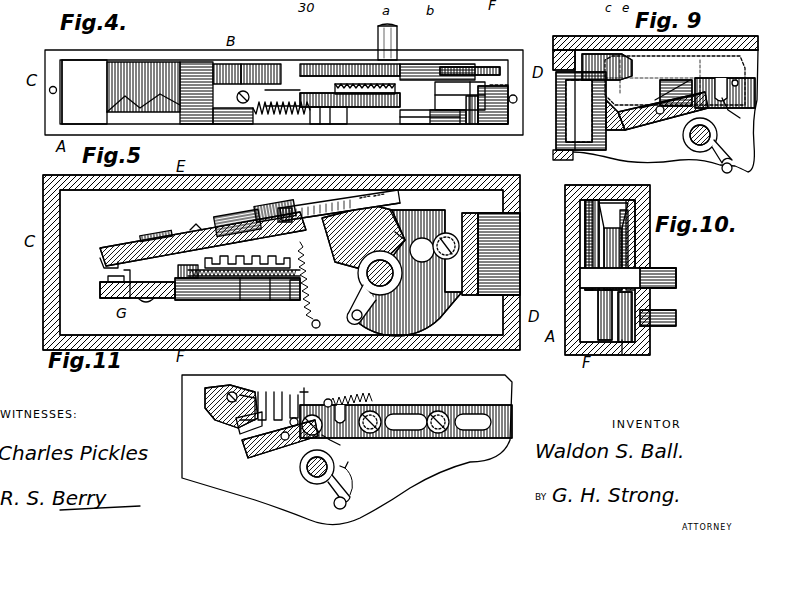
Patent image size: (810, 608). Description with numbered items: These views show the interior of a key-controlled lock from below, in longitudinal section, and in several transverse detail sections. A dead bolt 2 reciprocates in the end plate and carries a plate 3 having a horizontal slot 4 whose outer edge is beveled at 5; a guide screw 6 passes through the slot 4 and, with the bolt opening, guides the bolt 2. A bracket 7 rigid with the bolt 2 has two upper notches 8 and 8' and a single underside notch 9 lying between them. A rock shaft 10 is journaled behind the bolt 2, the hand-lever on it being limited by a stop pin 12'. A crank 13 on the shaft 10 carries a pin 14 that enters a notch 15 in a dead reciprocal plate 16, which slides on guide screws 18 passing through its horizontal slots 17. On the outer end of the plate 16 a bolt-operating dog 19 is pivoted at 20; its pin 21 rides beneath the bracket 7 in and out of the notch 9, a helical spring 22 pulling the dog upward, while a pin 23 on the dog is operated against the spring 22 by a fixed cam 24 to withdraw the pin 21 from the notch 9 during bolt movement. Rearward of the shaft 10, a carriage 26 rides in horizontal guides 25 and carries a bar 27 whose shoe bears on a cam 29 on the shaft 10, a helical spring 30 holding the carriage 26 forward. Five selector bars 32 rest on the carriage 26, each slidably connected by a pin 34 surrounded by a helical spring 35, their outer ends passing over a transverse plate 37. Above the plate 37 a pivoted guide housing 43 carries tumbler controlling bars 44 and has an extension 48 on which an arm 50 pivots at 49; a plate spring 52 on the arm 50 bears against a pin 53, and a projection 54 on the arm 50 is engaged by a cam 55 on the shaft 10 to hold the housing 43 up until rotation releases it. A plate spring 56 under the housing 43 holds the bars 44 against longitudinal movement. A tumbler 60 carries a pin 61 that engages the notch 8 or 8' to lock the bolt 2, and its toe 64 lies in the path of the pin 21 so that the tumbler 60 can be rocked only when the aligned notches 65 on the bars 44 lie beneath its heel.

In FIG. 4, the dead bolt 2 is at (493, 112).
In FIG. 5, the dead bolt 2 is at (520, 240).
In FIG. 4, the plate 3 is at (472, 124).
In FIG. 5, the plate 3 is at (445, 290).
In FIG. 10, the plate 3 is at (580, 218).
In FIG. 5, the slot 4 is at (408, 266).
In FIG. 5, the beveled edge 5 is at (392, 252).
In FIG. 4, the guide screw 6 is at (446, 124).
In FIG. 5, the guide screw 6 is at (434, 247).
In FIG. 4, the bracket 7 is at (460, 103).
In FIG. 9, the bracket 7 is at (552, 62).
In FIG. 10, the bracket 7 is at (640, 196).
In FIG. 11, the bracket 7 is at (278, 392).
In FIG. 11, the notch 8 is at (262, 392).
In FIG. 11, the notch 8' is at (312, 386).
In FIG. 11, the notch 9 is at (295, 395).
In FIG. 4, the rock shaft 10 is at (376, 42).
In FIG. 5, the rock shaft 10 is at (358, 280).
In FIG. 9, the rock shaft 10 is at (700, 135).
In FIG. 10, the rock shaft 10 is at (672, 272).
In FIG. 11, the rock shaft 10 is at (300, 475).
In FIG. 10, the stop pin 12' is at (660, 307).
In FIG. 4, the crank 13 is at (350, 100).
In FIG. 5, the crank 13 is at (362, 318).
In FIG. 9, the crank 13 is at (698, 152).
In FIG. 10, the crank 13 is at (622, 354).
In FIG. 11, the crank 13 is at (356, 496).
In FIG. 5, the pin 14 is at (352, 317).
In FIG. 9, the pin 14 is at (732, 160).
In FIG. 10, the pin 14 is at (638, 334).
In FIG. 11, the pin 14 is at (334, 505).
In FIG. 9, the notch 15 is at (729, 110).
In FIG. 4, the reciprocal plate 16 is at (318, 64).
In FIG. 9, the reciprocal plate 16 is at (752, 78).
In FIG. 11, the reciprocal plate 16 is at (494, 405).
In FIG. 11, the horizontal slots 17 is at (400, 430).
In FIG. 4, the guide screws 18 is at (360, 86).
In FIG. 11, the guide screws 18 is at (420, 396).
In FIG. 4, the bolt-operating dog 19 is at (425, 72).
In FIG. 9, the bolt-operating dog 19 is at (636, 128).
In FIG. 11, the bolt-operating dog 19 is at (240, 440).
In FIG. 9, the pivot 20 is at (690, 110).
In FIG. 11, the pivot 20 is at (340, 445).
In FIG. 9, the pin 21 is at (660, 116).
In FIG. 11, the pin 21 is at (290, 444).
In FIG. 11, the helical spring 22 is at (350, 402).
In FIG. 9, the pin 23 is at (606, 122).
In FIG. 10, the pin 23 is at (598, 320).
In FIG. 11, the pin 23 is at (231, 417).
In FIG. 4, the fixed cam 24 is at (478, 67).
In FIG. 9, the fixed cam 24 is at (595, 36).
In FIG. 10, the fixed cam 24 is at (640, 246).
In FIG. 11, the fixed cam 24 is at (200, 432).
In FIG. 4, the horizontal guides 25 is at (213, 64).
In FIG. 5, the horizontal guides 25 is at (170, 298).
In FIG. 4, the carriage 26 is at (282, 64).
In FIG. 5, the carriage 26 is at (262, 300).
In FIG. 4, the bar 27 is at (328, 115).
In FIG. 4, the cam 29 is at (430, 116).
In FIG. 4, the helical spring 30 is at (275, 116).
In FIG. 4, the selector bars 32 is at (143, 87).
In FIG. 5, the selector bars 32 is at (270, 252).
In FIG. 5, the pin 34 is at (295, 300).
In FIG. 5, the helical spring 35 is at (235, 300).
In FIG. 4, the plate 37 is at (102, 92).
In FIG. 5, the plate 37 is at (101, 294).
In FIG. 5, the guide housing 43 is at (160, 245).
In FIG. 5, the bars 44 is at (116, 256).
In FIG. 5, the extension 48 is at (262, 218).
In FIG. 5, the pivot 49 is at (292, 208).
In FIG. 5, the arm 50 is at (322, 206).
In FIG. 10, the arm 50 is at (590, 200).
In FIG. 5, the plate spring 52 is at (240, 228).
In FIG. 5, the pin 53 is at (362, 238).
In FIG. 5, the projection 54 is at (384, 192).
In FIG. 10, the cam 55 is at (610, 218).
In FIG. 5, the plate spring 56 is at (104, 264).
In FIG. 9, the tumbler 60 is at (725, 56).
In FIG. 9, the pin 61 is at (642, 54).
In FIG. 9, the toe 64 is at (579, 111).
In FIG. 10, the toe 64 is at (600, 200).
In FIG. 5, the notches 65 is at (198, 226).